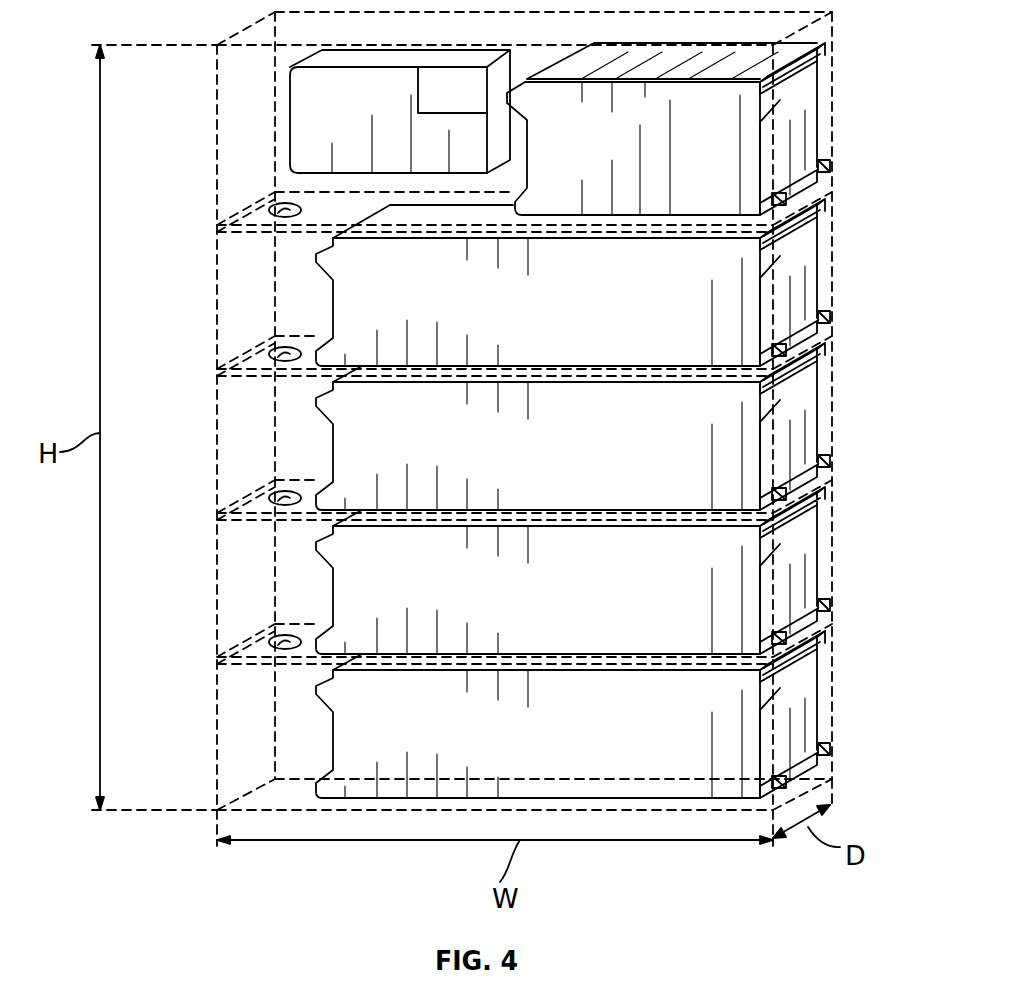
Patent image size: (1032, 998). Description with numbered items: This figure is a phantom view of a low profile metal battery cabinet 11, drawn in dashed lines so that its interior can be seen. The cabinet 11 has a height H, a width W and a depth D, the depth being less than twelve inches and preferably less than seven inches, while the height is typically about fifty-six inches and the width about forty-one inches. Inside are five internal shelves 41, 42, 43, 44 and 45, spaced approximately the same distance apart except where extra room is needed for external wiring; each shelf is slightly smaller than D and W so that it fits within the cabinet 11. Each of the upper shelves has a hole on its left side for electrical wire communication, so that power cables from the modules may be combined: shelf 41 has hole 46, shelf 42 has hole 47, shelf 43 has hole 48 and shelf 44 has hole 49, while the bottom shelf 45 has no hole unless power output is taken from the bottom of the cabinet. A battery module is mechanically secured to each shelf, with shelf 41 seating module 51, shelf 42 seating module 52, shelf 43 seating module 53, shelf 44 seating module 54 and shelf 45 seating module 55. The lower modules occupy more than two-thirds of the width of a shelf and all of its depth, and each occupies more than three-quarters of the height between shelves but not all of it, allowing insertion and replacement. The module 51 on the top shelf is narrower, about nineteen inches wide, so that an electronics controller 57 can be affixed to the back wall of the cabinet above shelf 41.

The battery cabinet 11 is at (824, 30).
The shelf 41 is at (573, 215).
The shelf 42 is at (513, 366).
The shelf 43 is at (513, 510).
The shelf 44 is at (513, 654).
The bottom shelf 45 is at (513, 798).
The hole 46 is at (293, 207).
The hole 47 is at (293, 351).
The hole 48 is at (293, 495).
The hole 49 is at (293, 639).
The battery module 51 is at (808, 127).
The battery module 52 is at (812, 273).
The battery module 53 is at (812, 420).
The battery module 54 is at (812, 567).
The battery module 55 is at (812, 722).
The electronics controller 57 is at (300, 110).